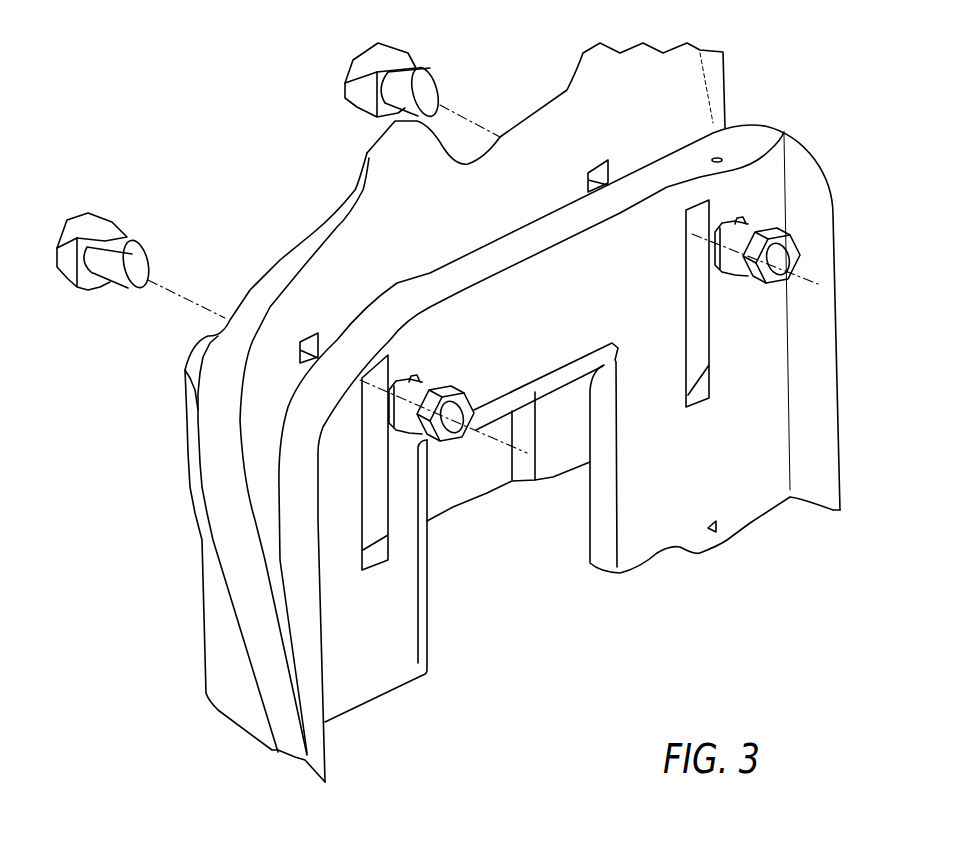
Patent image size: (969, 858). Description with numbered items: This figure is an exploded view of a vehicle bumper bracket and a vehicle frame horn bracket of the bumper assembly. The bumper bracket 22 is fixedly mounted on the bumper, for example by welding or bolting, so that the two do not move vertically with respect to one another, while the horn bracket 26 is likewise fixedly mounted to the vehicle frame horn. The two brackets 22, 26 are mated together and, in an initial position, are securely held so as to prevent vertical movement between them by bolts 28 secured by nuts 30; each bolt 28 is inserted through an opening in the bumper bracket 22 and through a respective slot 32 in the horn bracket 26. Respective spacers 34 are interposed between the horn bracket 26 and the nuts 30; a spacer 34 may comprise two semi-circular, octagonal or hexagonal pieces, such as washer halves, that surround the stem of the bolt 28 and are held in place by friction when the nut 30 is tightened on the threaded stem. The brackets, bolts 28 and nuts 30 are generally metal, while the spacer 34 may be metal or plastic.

The bumper bracket 22 is at (313, 247).
The horn bracket 26 is at (383, 660).
The bolt 28 is at (93, 222).
The nut 30 is at (443, 437).
The slot 32 is at (372, 517).
The spacer 34 is at (420, 370).